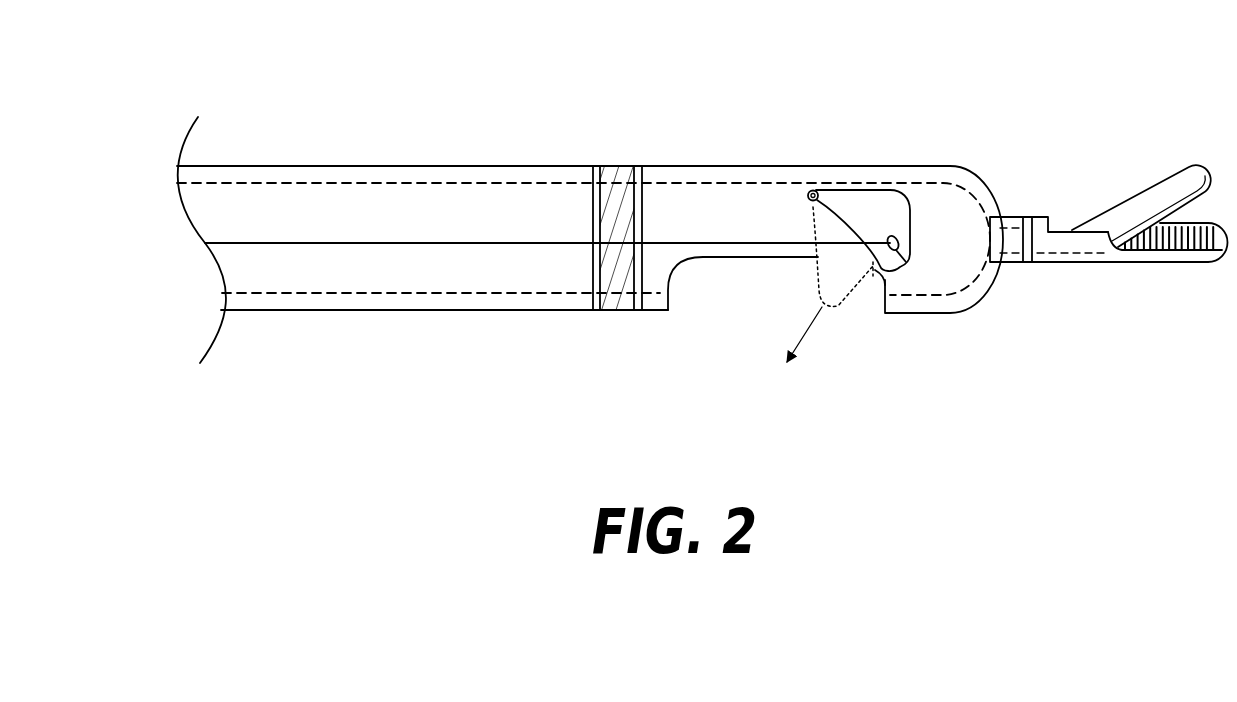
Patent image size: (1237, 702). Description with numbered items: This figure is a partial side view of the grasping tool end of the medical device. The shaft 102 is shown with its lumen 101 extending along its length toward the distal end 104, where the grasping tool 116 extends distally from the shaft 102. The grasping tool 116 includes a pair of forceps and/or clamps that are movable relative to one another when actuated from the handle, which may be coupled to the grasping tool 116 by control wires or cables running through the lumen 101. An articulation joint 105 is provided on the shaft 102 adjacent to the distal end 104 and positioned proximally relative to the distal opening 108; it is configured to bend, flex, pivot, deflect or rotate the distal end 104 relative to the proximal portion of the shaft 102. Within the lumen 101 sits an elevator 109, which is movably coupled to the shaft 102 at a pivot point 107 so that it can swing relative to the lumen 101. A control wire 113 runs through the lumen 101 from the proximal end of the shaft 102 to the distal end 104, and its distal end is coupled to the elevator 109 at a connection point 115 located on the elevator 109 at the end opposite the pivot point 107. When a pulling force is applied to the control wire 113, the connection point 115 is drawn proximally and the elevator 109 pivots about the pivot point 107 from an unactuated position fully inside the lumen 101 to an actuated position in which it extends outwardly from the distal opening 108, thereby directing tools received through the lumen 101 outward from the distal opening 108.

The lumen 101 is at (268, 270).
The shaft 102 is at (410, 165).
The distal end 104 is at (1008, 299).
The articulation joint 105 is at (633, 166).
The pivot point 107 is at (817, 188).
The distal opening 108 is at (738, 257).
The elevator 109 is at (873, 190).
The control wire 113 is at (422, 243).
The connection point 115 is at (906, 262).
The grasping tool 116 is at (1199, 150).